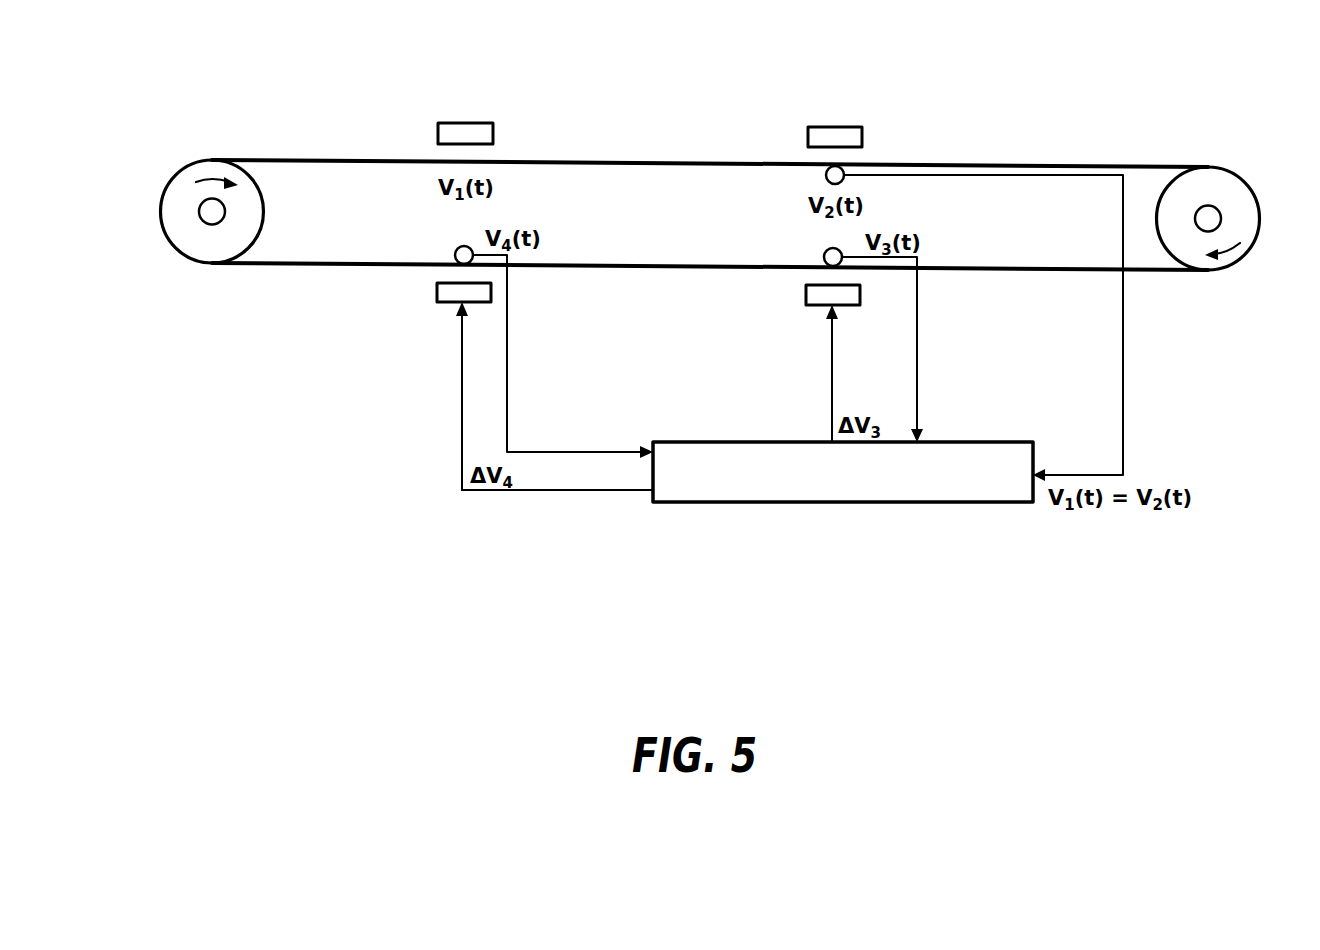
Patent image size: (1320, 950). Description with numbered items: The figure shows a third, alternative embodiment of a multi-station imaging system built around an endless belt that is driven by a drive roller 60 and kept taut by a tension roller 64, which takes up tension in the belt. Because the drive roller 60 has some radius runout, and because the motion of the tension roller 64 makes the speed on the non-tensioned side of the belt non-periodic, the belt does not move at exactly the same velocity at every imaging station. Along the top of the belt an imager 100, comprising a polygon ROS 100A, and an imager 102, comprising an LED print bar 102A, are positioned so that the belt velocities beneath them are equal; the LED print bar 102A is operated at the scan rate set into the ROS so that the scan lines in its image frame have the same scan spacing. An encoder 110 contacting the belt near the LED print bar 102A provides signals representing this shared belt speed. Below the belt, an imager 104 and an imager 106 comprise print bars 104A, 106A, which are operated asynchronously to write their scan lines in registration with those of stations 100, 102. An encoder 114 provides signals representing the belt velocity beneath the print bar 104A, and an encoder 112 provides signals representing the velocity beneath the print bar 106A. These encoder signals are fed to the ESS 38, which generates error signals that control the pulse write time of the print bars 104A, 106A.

The ESS 38 is at (757, 495).
The drive roller 60 is at (1222, 181).
The tension roller 64 is at (218, 170).
The imager 100 is at (482, 86).
The polygon ROS 100A is at (487, 128).
The imager 102 is at (804, 99).
The LED print bar 102A is at (843, 137).
The imager 104 is at (410, 335).
The print bar 104A is at (447, 305).
The imager 106 is at (771, 336).
The print bar 106A is at (812, 298).
The encoder 110 is at (846, 171).
The encoder 112 is at (825, 252).
The encoder 114 is at (458, 248).